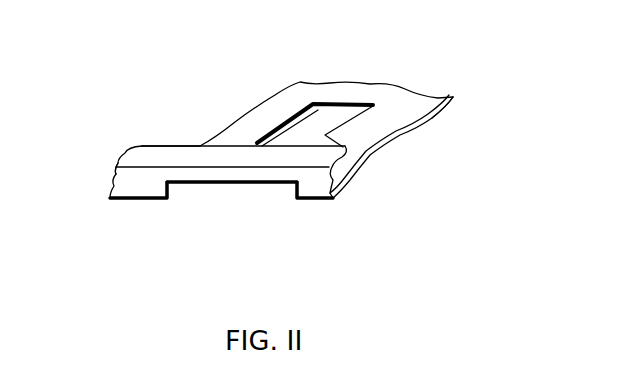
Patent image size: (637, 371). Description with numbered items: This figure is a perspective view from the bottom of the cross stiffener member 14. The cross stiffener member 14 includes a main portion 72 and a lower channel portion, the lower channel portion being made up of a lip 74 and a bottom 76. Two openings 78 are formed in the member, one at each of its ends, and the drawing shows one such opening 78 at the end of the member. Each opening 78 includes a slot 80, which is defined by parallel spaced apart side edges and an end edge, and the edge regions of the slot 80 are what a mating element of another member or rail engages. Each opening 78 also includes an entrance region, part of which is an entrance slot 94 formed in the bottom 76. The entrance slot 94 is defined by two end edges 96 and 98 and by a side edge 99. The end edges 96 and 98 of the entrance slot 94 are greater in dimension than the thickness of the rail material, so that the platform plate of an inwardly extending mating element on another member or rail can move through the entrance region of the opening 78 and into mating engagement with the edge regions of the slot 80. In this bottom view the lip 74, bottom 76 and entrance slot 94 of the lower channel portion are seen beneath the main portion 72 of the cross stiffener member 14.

The cross stiffener member 14 is at (390, 157).
The main portion 72 is at (428, 103).
The lip 74 is at (164, 162).
The bottom 76 is at (118, 188).
The opening 78 is at (342, 96).
The slot 80 is at (310, 122).
The entrance slot 94 is at (247, 190).
The end edge 96 is at (175, 190).
The end edge 98 is at (300, 198).
The side edge 99 is at (216, 181).